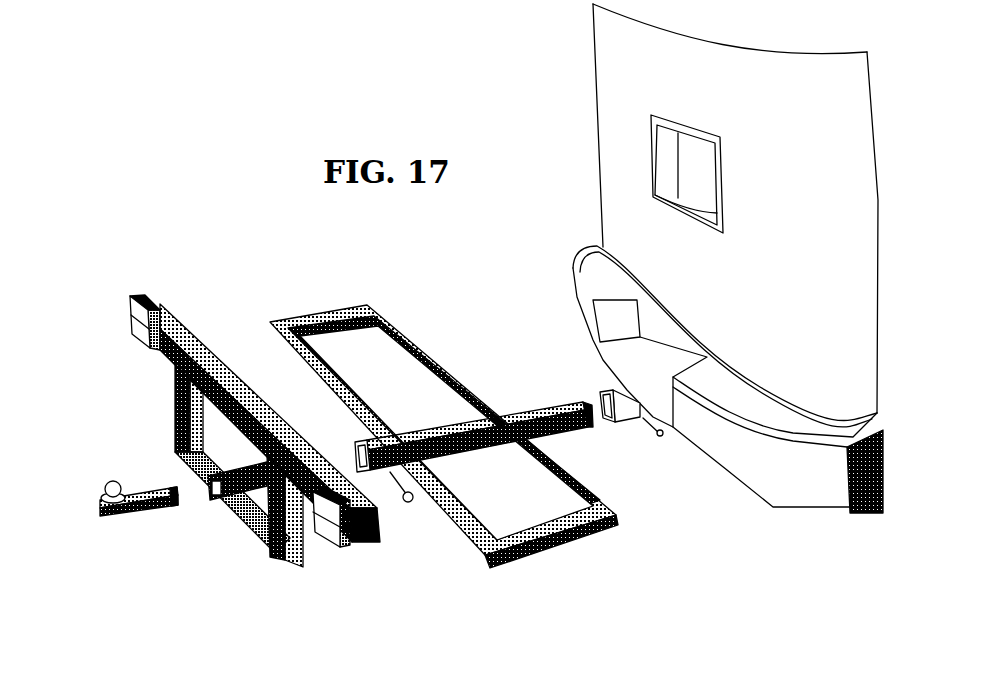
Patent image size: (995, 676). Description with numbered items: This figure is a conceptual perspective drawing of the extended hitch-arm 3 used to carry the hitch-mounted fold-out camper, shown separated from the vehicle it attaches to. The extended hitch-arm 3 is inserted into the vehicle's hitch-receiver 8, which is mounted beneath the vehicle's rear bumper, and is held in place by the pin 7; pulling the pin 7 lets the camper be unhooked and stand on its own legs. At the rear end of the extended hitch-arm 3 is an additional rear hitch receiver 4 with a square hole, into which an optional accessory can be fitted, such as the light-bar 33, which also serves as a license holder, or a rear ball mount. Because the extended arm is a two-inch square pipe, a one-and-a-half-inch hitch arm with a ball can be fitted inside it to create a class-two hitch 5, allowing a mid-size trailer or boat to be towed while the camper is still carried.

The light-bar 33 is at (168, 313).
The rear hitch receiver 4 is at (353, 442).
The extended hitch-arm 3 is at (537, 410).
The hitch-receiver 8 is at (600, 390).
The pin 7 is at (660, 437).
The Class 2 hitch 5 is at (143, 493).